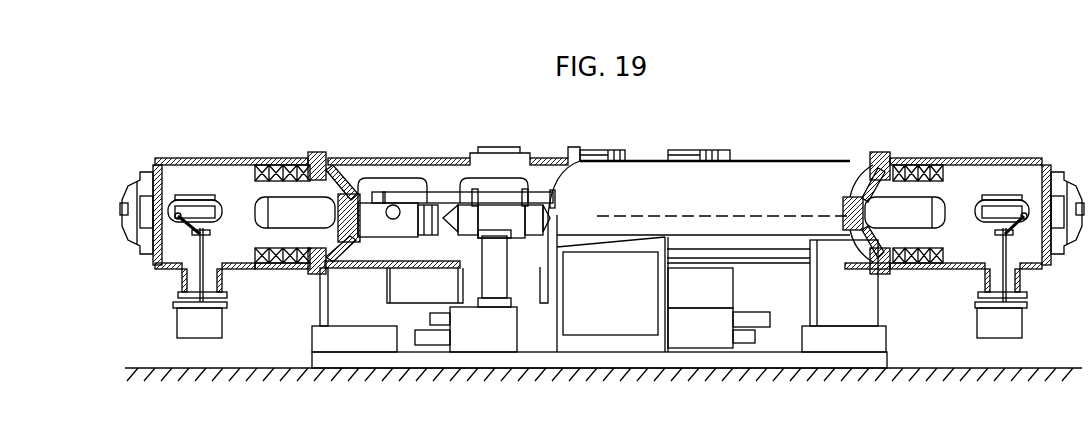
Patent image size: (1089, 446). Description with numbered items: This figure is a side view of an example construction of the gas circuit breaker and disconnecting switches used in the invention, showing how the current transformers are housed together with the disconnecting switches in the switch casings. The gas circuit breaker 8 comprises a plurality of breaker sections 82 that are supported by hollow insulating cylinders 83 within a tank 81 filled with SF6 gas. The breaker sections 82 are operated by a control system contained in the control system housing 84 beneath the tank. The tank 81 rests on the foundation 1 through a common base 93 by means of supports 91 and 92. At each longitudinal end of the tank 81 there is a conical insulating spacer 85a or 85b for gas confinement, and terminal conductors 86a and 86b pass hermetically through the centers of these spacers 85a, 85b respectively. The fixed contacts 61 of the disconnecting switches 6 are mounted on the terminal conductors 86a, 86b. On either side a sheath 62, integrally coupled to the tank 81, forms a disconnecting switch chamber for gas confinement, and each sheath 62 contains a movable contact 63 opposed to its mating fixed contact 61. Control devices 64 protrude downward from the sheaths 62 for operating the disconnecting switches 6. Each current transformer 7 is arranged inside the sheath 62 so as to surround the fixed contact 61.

The foundation 1 is at (717, 372).
The disconnecting switch 6 is at (234, 257).
The current transformer 7 is at (282, 165).
The gas circuit breaker 8 is at (740, 207).
The fixed contact 61 is at (262, 195).
The sheath 62 is at (186, 158).
The movable contact 63 is at (192, 213).
The control device 64 is at (212, 323).
The tank 81 is at (440, 158).
The breaker section 82 is at (443, 226).
The hollow insulating cylinder 83 is at (488, 270).
The control system housing 84 is at (592, 325).
The conical insulating spacer 85a is at (335, 175).
The conical insulating spacer 85b is at (871, 165).
The terminal conductor 86a is at (342, 190).
The terminal conductor 86b is at (852, 200).
The support 91 is at (335, 300).
The support 92 is at (877, 298).
The common base 93 is at (437, 360).